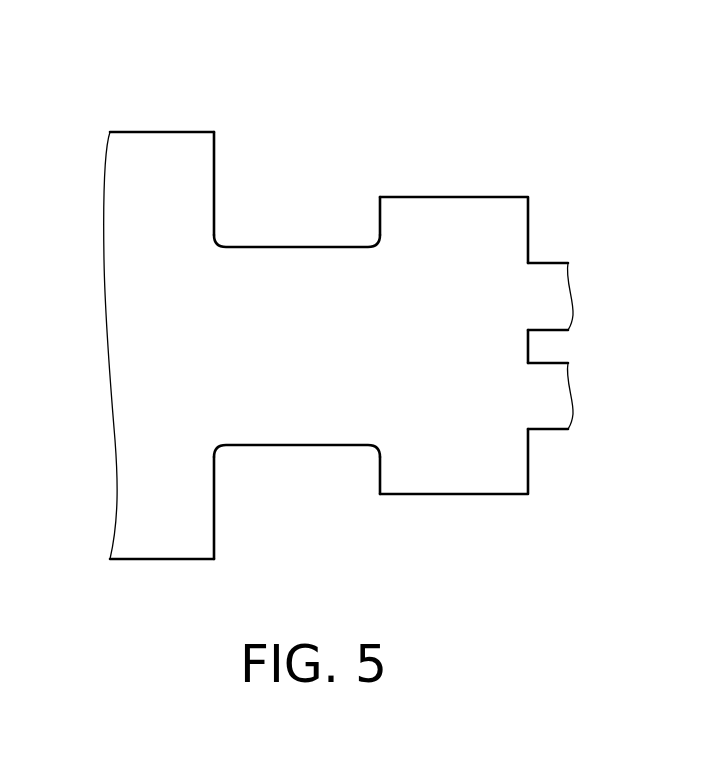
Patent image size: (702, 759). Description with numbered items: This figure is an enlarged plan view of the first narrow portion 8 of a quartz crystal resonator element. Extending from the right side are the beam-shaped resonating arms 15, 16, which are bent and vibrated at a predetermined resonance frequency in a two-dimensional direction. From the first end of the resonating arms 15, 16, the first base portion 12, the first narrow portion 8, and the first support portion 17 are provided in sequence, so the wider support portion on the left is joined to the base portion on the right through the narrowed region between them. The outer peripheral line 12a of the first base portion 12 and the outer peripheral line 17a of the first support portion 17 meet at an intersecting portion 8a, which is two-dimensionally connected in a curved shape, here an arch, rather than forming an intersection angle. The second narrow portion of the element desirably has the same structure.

The first narrow portion 8 is at (252, 334).
The intersecting portion 8a is at (222, 238).
The first base portion 12 is at (453, 483).
The outer peripheral line of the first base portion 12a is at (378, 200).
The resonating arm 15 is at (551, 272).
The resonating arm 16 is at (550, 417).
The first support portion 17 is at (162, 143).
The outer peripheral line of the first support portion 17a is at (215, 155).